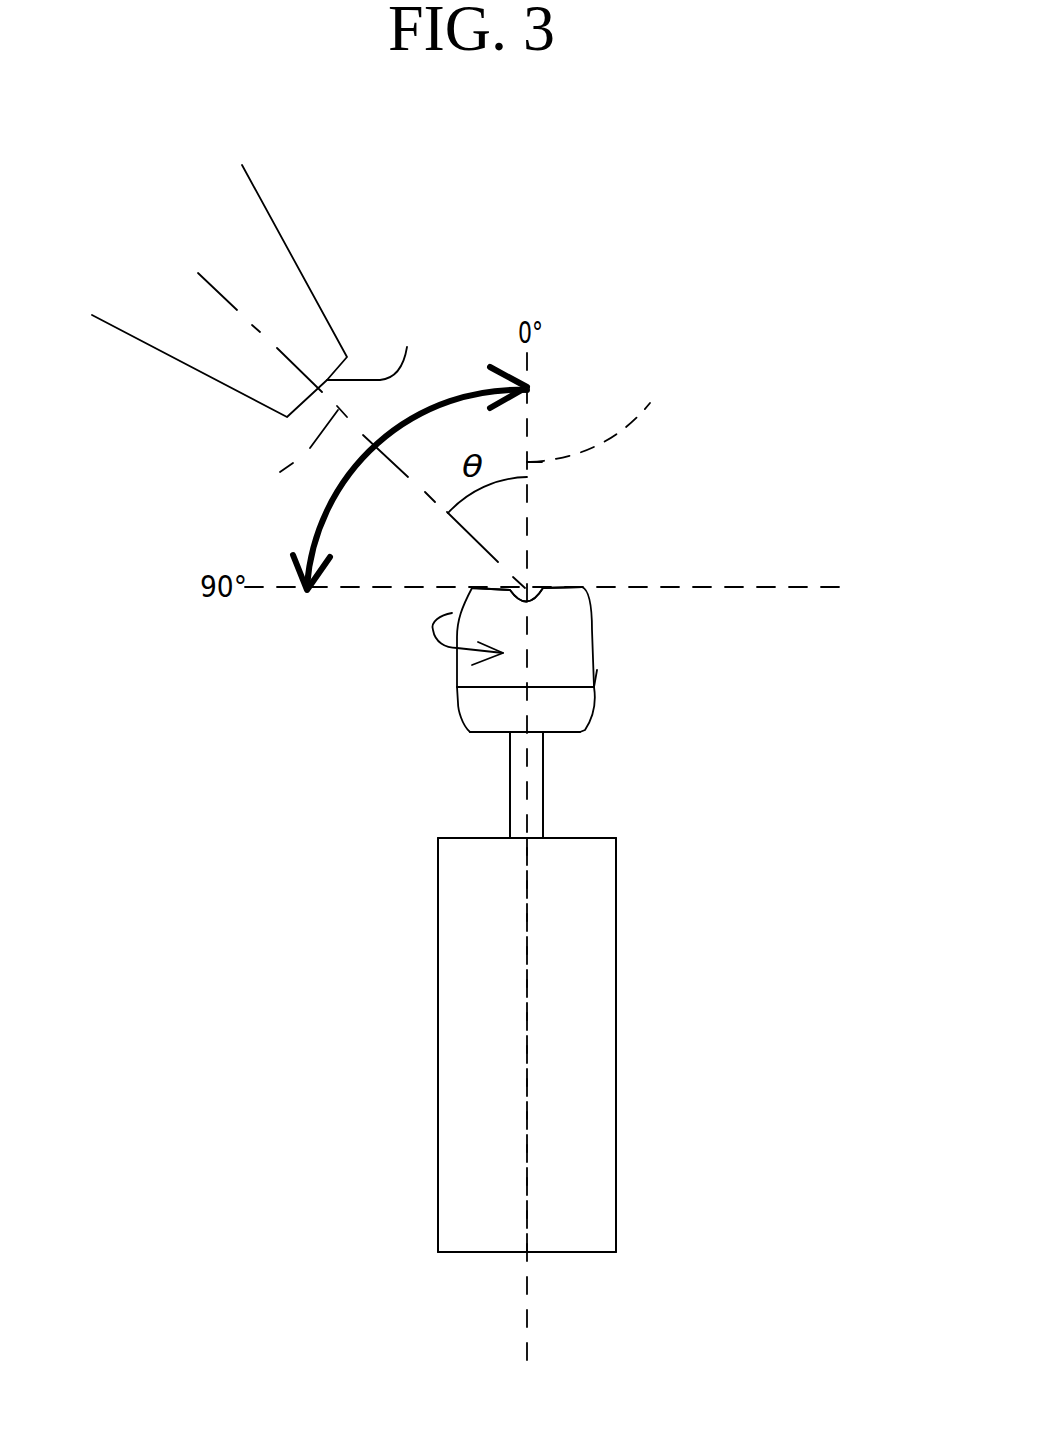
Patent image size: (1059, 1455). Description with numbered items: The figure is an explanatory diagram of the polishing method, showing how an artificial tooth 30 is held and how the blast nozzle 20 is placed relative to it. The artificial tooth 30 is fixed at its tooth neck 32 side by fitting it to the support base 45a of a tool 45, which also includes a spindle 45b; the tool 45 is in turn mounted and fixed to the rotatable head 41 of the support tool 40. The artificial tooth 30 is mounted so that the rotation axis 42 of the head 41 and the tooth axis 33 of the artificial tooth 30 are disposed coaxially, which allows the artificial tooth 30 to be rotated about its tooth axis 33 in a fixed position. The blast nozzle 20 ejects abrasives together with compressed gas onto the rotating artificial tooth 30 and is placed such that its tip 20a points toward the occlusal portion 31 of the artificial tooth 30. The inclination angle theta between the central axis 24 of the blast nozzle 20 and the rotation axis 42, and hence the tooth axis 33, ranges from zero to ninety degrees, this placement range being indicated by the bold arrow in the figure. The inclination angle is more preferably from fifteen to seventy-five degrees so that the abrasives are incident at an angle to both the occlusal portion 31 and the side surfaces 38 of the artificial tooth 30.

The blast nozzle 20 is at (273, 218).
The tip of the blast nozzle 20a is at (407, 347).
The central axis of the blast nozzle 24 is at (263, 475).
The artificial tooth 30 is at (567, 632).
The occlusal portion 31 is at (545, 587).
The tooth neck 32 is at (498, 703).
The tooth axis 33 is at (610, 425).
The side surfaces 38 is at (457, 672).
The support tool 40 is at (582, 1020).
The head 41 is at (527, 1045).
The rotation axis of the head 42 is at (528, 967).
The tool 45 is at (718, 727).
The support base 45a is at (563, 713).
The spindle 45b is at (537, 800).